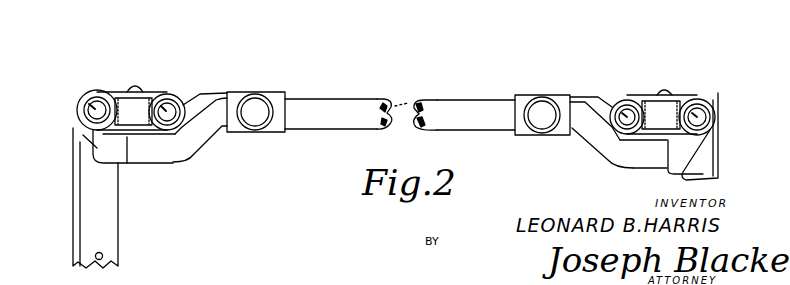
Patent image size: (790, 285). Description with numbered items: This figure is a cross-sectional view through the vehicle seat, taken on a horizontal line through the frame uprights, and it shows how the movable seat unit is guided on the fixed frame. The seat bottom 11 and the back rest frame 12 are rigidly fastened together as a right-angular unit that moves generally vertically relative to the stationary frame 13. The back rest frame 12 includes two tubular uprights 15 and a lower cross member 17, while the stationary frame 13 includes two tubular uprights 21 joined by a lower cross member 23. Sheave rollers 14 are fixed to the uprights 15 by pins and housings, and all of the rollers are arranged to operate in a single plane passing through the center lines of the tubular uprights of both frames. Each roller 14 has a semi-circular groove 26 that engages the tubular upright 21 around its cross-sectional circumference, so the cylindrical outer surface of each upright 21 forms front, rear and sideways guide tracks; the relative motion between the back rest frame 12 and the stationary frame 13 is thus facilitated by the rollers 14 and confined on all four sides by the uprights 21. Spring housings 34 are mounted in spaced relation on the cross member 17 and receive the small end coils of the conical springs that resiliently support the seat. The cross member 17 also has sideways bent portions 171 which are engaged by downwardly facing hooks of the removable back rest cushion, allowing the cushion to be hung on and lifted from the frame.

The seat bottom 11 is at (73, 150).
The back rest frame 12 is at (214, 144).
The stationary frame 13 is at (198, 86).
The sheave roller 14 is at (133, 117).
The tubular upright 15 is at (88, 103).
The lower cross member 17 is at (485, 103).
The sideways bent portion 171 is at (141, 151).
The tubular upright 21 is at (166, 108).
The lower cross member 23 is at (420, 100).
The semi-circular groove 26 is at (171, 118).
The spring housing 34 is at (272, 93).